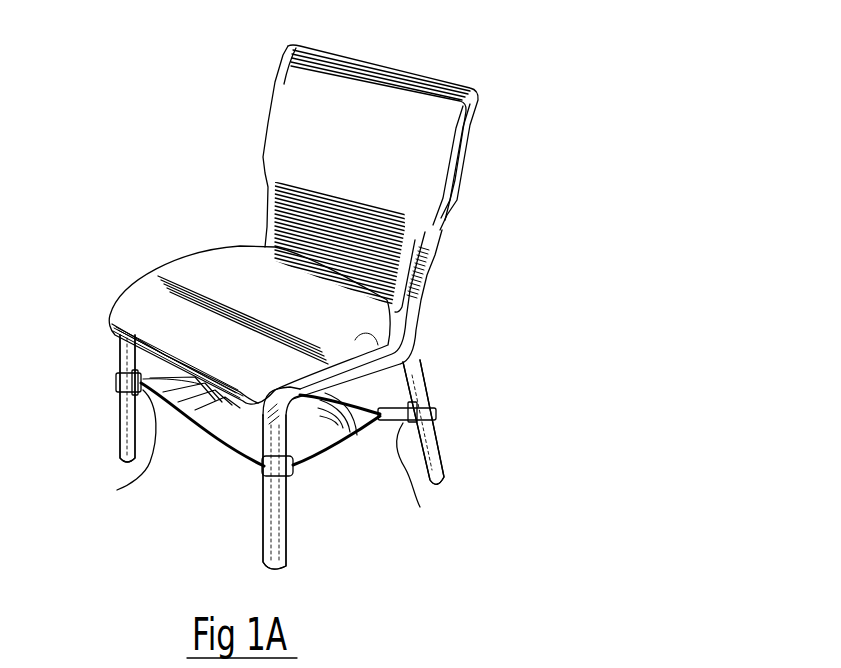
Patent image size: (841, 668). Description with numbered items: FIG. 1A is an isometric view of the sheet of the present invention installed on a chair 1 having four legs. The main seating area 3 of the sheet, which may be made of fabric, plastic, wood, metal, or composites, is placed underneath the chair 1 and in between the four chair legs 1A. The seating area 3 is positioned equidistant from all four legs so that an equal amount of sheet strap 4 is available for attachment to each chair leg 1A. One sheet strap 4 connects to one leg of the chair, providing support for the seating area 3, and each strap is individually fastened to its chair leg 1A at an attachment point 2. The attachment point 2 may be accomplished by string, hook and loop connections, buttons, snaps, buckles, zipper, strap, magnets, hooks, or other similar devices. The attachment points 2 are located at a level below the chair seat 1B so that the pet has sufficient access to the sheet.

The chair 1 is at (430, 84).
The chair leg 1A is at (119, 432).
The chair seat 1B is at (227, 280).
The attachment point 2 is at (116, 382).
The sheet seating area 3 is at (222, 443).
The sheet strap 4 is at (267, 458).